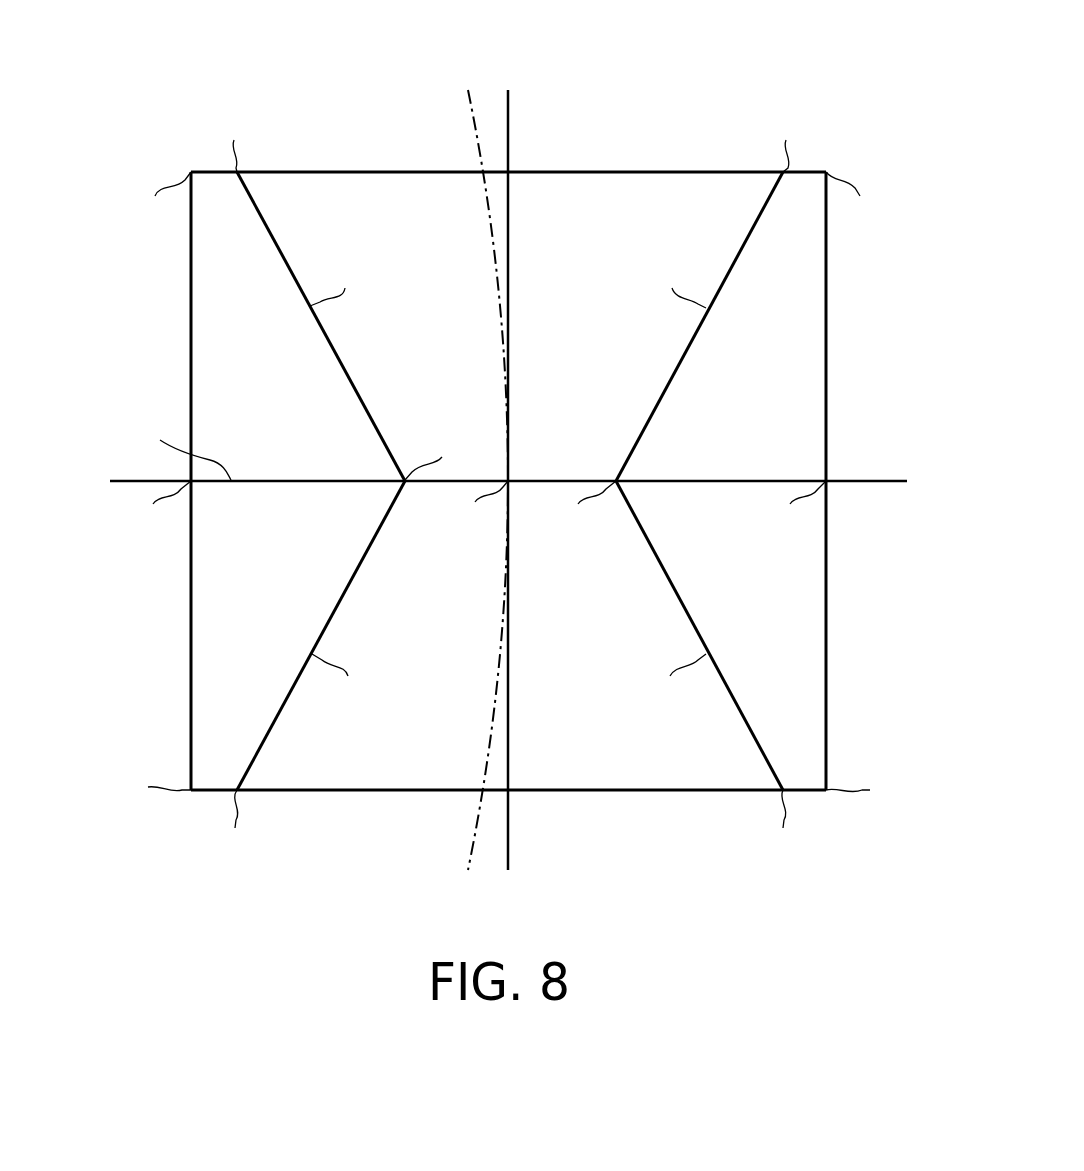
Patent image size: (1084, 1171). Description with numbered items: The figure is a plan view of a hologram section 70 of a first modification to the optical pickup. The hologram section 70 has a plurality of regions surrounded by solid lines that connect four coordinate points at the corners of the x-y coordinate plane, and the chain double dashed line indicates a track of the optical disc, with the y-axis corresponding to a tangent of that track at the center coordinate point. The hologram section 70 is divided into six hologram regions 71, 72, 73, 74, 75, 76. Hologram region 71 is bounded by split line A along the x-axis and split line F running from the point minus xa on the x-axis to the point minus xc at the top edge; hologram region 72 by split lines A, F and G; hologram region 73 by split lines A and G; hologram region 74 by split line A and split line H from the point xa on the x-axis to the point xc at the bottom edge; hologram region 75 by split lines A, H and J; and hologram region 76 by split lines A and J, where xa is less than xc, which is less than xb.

The hologram section 70 is at (505, 441).
The hologram region 71 is at (193, 333).
The hologram region 72 is at (351, 180).
The hologram region 73 is at (822, 331).
The hologram region 74 is at (822, 600).
The hologram region 75 is at (355, 782).
The hologram region 76 is at (195, 602).